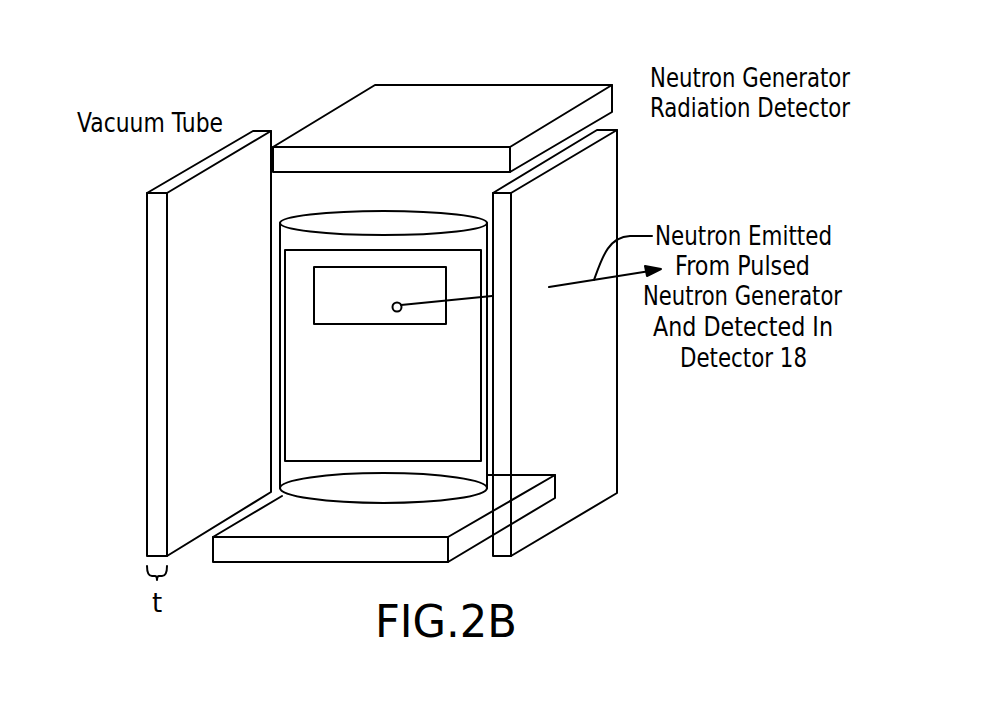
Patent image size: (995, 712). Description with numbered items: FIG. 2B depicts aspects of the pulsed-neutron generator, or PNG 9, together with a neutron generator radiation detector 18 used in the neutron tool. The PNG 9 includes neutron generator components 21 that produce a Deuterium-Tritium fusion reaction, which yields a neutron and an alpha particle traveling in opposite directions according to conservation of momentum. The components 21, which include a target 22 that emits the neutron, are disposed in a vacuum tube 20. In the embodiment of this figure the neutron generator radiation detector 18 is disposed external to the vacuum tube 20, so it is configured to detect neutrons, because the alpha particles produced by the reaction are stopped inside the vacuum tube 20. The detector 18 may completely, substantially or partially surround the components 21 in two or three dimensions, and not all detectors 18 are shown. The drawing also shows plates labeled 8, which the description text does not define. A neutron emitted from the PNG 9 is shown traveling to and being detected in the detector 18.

The shielding plate 8 is at (158, 470).
The pulsed-neutron generator 9 is at (309, 253).
The neutron generator radiation detector 18 is at (600, 206).
The vacuum tube 20 is at (300, 212).
The neutron generator components 21 is at (470, 409).
The target 22 is at (430, 299).